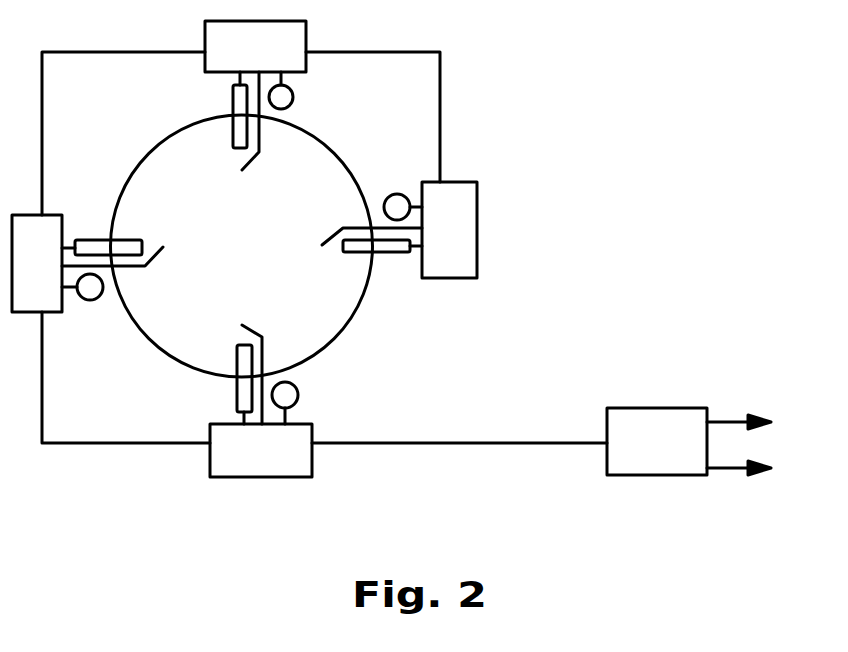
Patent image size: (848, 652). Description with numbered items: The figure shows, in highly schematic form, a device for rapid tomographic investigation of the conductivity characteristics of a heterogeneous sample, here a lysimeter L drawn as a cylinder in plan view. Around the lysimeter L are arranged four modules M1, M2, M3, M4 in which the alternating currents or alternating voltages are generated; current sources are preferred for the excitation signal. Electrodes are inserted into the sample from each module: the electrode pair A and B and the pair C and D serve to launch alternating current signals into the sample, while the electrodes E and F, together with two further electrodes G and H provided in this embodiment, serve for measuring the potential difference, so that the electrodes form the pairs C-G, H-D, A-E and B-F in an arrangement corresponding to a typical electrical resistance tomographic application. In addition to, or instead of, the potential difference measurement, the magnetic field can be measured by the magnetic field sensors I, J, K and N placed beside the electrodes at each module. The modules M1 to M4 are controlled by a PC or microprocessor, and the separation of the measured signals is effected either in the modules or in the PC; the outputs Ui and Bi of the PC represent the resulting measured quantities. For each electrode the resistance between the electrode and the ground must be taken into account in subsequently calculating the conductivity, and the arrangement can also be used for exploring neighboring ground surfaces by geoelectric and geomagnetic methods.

The lysimeter L is at (242, 246).
The module M1 is at (261, 450).
The module M2 is at (37, 263).
The module M3 is at (255, 46).
The module M4 is at (449, 230).
The element PC is at (657, 441).
The voltage output Ui is at (756, 417).
The field output Bi is at (755, 463).
The electrode A is at (228, 381).
The electrode B is at (103, 232).
The electrode C is at (221, 121).
The electrode D is at (380, 269).
The electrode E is at (261, 365).
The electrode F is at (116, 268).
The electrode G is at (261, 133).
The electrode H is at (363, 226).
The magnetic field sensor I is at (294, 399).
The magnetic field sensor J is at (82, 306).
The magnetic field sensor K is at (293, 94).
The magnetic field sensor N is at (399, 192).